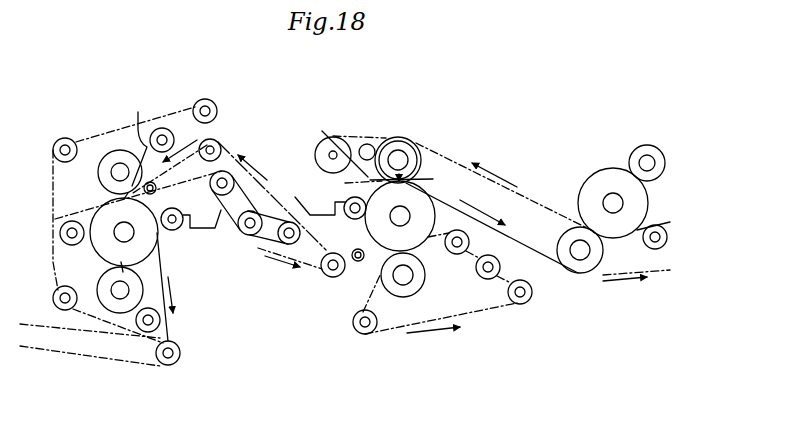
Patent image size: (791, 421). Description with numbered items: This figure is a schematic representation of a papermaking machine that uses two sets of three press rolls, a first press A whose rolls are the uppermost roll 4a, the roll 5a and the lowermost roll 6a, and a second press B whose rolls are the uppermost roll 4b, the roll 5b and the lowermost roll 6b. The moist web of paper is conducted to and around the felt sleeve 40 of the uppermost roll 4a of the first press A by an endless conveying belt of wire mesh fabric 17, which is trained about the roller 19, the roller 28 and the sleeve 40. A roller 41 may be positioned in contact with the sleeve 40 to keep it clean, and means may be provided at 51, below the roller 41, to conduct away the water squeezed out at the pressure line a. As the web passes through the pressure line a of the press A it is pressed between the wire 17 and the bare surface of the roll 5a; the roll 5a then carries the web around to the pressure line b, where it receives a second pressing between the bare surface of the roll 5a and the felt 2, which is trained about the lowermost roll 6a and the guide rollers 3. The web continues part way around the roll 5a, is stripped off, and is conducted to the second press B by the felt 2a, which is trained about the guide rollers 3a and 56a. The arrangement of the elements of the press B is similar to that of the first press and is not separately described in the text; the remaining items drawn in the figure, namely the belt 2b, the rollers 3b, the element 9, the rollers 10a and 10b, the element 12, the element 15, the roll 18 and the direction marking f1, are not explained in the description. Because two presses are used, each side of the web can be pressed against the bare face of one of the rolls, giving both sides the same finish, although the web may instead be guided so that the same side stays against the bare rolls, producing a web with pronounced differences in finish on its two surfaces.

The first press A is at (388, 104).
The second press B is at (102, 92).
The felt 2 is at (406, 327).
The felt 2a is at (223, 148).
The belt 2b is at (122, 128).
The guide rollers 3 is at (469, 242).
The guide rollers 3a is at (251, 212).
The guide roller 3b is at (65, 138).
The uppermost roll 4a is at (400, 142).
The uppermost roll 4b is at (100, 175).
The roll 5a is at (400, 216).
The roll 5b is at (153, 238).
The guide roller 56a is at (118, 207).
The lowermost roll 6a is at (425, 283).
The lowermost roll 6b is at (103, 286).
The guide 9 is at (160, 207).
The roller 10a is at (355, 220).
The roller 10b is at (181, 229).
The guide plate 12 is at (309, 200).
The roller 15 is at (357, 262).
The endless conveying belt of wire mesh fabric 17 is at (560, 214).
The roller 18 is at (592, 185).
The roller 19 is at (578, 268).
The roller 28 is at (315, 154).
The felt sleeve 40 is at (418, 153).
The roller 41 is at (366, 144).
The means to conduct away water 51 is at (334, 147).
The pressure line a is at (118, 189).
The pressure line b is at (265, 253).
The direction of travel f1 is at (498, 169).